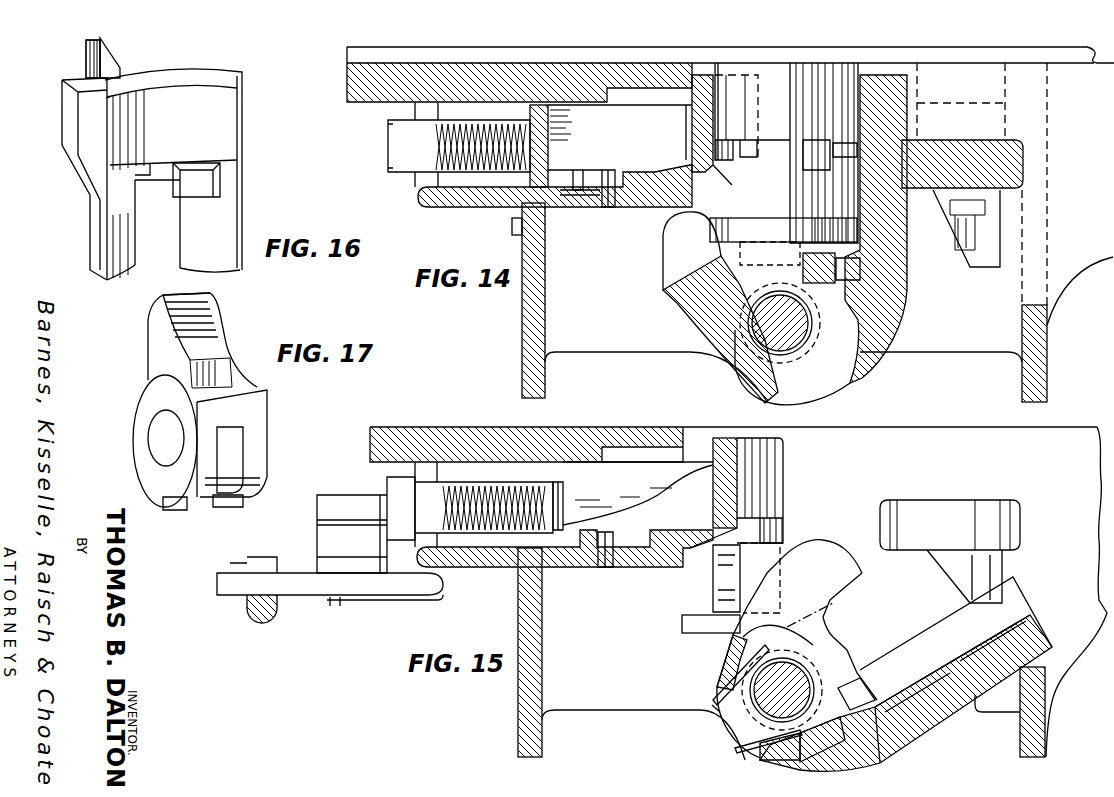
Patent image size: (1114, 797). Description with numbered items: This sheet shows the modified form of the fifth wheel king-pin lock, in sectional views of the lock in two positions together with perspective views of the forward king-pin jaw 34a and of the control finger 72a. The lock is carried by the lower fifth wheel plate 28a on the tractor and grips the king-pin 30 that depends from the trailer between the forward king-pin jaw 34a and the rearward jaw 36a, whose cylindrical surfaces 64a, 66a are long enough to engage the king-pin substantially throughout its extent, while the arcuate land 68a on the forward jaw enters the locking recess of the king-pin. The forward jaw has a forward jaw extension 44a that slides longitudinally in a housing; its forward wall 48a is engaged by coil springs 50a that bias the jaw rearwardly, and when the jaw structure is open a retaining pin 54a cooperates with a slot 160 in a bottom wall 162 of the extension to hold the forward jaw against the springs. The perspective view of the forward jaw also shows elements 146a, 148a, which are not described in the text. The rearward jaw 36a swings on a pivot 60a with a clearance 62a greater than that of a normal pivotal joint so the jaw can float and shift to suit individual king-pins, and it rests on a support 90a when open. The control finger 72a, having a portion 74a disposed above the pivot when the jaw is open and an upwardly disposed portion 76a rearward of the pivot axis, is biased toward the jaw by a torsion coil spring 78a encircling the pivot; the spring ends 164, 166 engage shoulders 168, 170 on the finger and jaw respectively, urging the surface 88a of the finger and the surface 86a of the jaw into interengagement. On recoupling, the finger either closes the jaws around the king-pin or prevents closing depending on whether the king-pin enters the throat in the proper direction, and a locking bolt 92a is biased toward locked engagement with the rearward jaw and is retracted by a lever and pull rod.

In FIG. 14, the lower fifth wheel plate 28a is at (428, 76).
In FIG. 15, the lower fifth wheel plate 28a is at (433, 447).
In FIG. 14, the king-pin 30 is at (808, 66).
In FIG. 14, the forward king-pin jaw 34a is at (704, 77).
In FIG. 15, the forward king-pin jaw 34a is at (725, 438).
In FIG. 16, the forward king-pin jaw 34a is at (246, 63).
In FIG. 14, the rearward jaw 36a is at (905, 292).
In FIG. 15, the rearward jaw 36a is at (920, 743).
In FIG. 14, the forward jaw extension 44a is at (640, 105).
In FIG. 15, the forward jaw extension 44a is at (640, 489).
In FIG. 16, the forward jaw extension 44a is at (72, 104).
In FIG. 14, the forward wall 48a is at (552, 130).
In FIG. 14, the coil springs 50a is at (466, 174).
In FIG. 15, the coil springs 50a is at (492, 480).
In FIG. 14, the retaining pin 54a is at (614, 176).
In FIG. 15, the retaining pin 54a is at (603, 568).
In FIG. 14, the pivot 60a is at (796, 333).
In FIG. 15, the pivot 60a is at (797, 700).
In FIG. 15, the clearance 62a is at (810, 760).
In FIG. 15, the cylindrical surface 64a is at (784, 457).
In FIG. 16, the cylindrical surface 64a is at (224, 128).
In FIG. 15, the cylindrical surface 66a is at (1020, 590).
In FIG. 15, the arcuate land 68a is at (770, 508).
In FIG. 16, the arcuate land 68a is at (205, 198).
In FIG. 14, the control finger 72a is at (730, 295).
In FIG. 15, the control finger 72a is at (759, 634).
In FIG. 17, the control finger 72a is at (160, 401).
In FIG. 14, the finger portion 74a is at (730, 216).
In FIG. 15, the finger portion 74a is at (858, 573).
In FIG. 17, the finger portion 74a is at (205, 315).
In FIG. 14, the upwardly disposed portion 76a is at (663, 238).
In FIG. 15, the upwardly disposed portion 76a is at (833, 540).
In FIG. 17, the upwardly disposed portion 76a is at (152, 305).
In FIG. 14, the torsion coil spring 78a is at (750, 328).
In FIG. 15, the torsion coil spring 78a is at (845, 628).
In FIG. 14, the surface 86a is at (862, 268).
In FIG. 15, the surface 86a is at (878, 728).
In FIG. 14, the surface 88a is at (860, 250).
In FIG. 15, the surface 88a is at (880, 695).
In FIG. 17, the surface 88a is at (258, 402).
In FIG. 14, the support 90a is at (1048, 385).
In FIG. 15, the support 90a is at (1046, 745).
In FIG. 14, the locking bolt 92a is at (1025, 164).
In FIG. 15, the locking bolt 92a is at (1022, 530).
In FIG. 16, the fin 146a is at (118, 63).
In FIG. 16, the rib 148a is at (101, 40).
In FIG. 14, the slot 160 is at (575, 198).
In FIG. 14, the bottom wall 162 is at (578, 176).
In FIG. 15, the spring end 164 is at (712, 703).
In FIG. 15, the spring end 166 is at (738, 754).
In FIG. 15, the shoulder 168 is at (715, 690).
In FIG. 15, the shoulder 170 is at (765, 762).